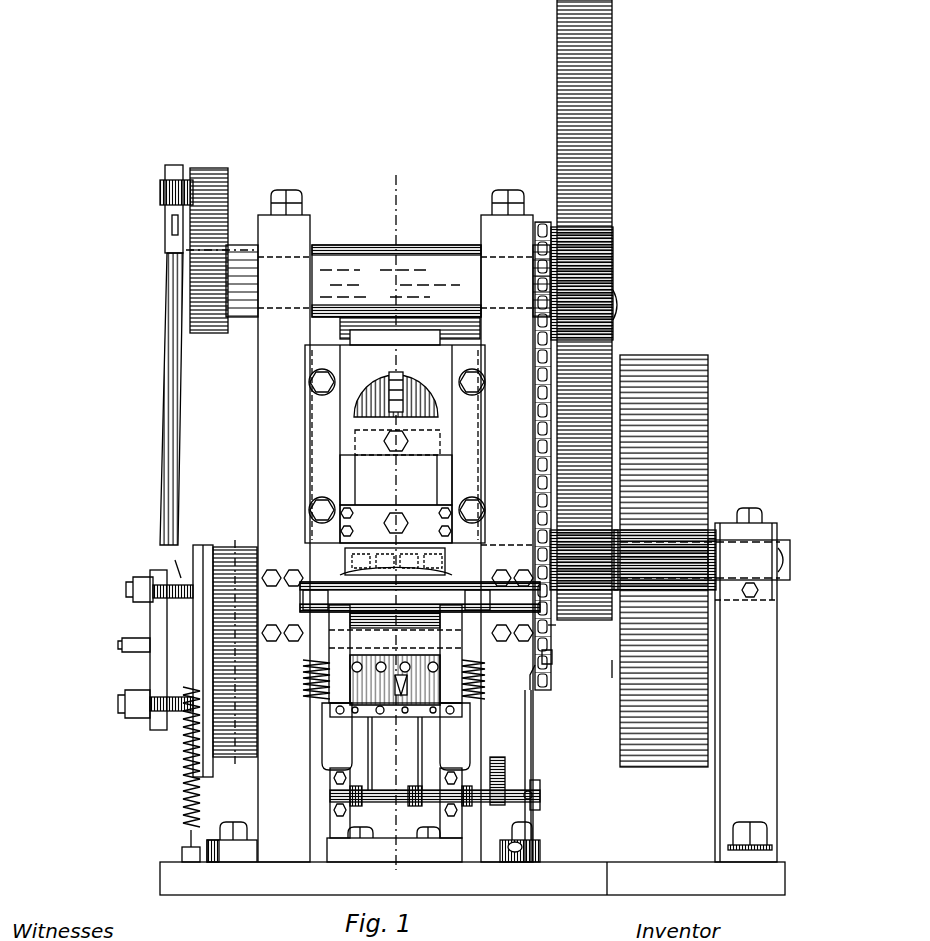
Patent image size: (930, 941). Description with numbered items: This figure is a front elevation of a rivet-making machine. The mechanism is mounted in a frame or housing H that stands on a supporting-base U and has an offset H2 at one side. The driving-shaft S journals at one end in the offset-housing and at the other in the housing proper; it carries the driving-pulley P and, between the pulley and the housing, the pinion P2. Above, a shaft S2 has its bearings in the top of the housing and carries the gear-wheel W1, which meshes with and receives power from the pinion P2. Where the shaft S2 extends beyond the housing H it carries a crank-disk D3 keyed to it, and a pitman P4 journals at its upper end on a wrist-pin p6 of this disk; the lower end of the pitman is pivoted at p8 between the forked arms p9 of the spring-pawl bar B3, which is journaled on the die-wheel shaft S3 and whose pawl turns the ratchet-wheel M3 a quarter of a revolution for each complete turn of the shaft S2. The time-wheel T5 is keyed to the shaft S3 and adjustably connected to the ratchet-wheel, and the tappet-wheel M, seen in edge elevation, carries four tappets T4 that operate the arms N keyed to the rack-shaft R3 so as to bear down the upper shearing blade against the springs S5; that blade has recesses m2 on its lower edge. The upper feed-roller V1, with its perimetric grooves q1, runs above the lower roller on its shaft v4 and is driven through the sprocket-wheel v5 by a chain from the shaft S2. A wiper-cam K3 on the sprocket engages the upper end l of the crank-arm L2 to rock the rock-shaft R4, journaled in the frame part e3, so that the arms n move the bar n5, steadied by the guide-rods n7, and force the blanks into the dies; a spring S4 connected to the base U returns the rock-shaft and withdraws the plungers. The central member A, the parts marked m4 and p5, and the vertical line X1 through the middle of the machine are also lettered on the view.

The supporting-base U is at (472, 878).
The center line X' X1 is at (389, 523).
The frame or housing H is at (395, 526).
The shaft S2 is at (388, 295).
The crank-disk D3 is at (222, 250).
The wrist-pin p6 is at (162, 194).
The pitman P4 is at (189, 466).
The gear-wheel W1 is at (612, 193).
The wiper-cam K3 is at (535, 660).
The pinion P2 is at (677, 561).
The sprocket-wheel v5 is at (560, 634).
The shaft of lower feed-roller v4 is at (552, 658).
The driving-pulley P is at (614, 670).
The offset of housing H2 is at (746, 685).
The driving-shaft S is at (788, 540).
The head A is at (395, 460).
The rack-shaft R3 is at (310, 588).
The arms N is at (396, 600).
The springs S5 is at (303, 690).
The guide-rod n7 is at (396, 687).
The grooves q1 is at (415, 680).
The roller carriage q is at (361, 691).
The upper feeding-roller V1 is at (406, 669).
The bar n5 is at (396, 718).
The arms n is at (395, 753).
The frame part e3 is at (350, 810).
The rock-shaft R4 is at (546, 797).
The pin p5 is at (534, 794).
The crank-arm L2 is at (531, 760).
The upper end of crank-arm l is at (512, 690).
The spring S4 is at (439, 842).
The tappets T4 is at (256, 760).
The time-wheel T5 is at (234, 546).
The die-wheel shaft S3 is at (256, 737).
The spring-pawl bar B3 is at (161, 650).
The forked arms p9 is at (148, 576).
The pivot p8 is at (169, 561).
The bolt m4 is at (118, 646).
The recesses m2 is at (155, 704).
The ratchet-wheel M3 is at (175, 752).
The tappet-wheel M is at (232, 810).